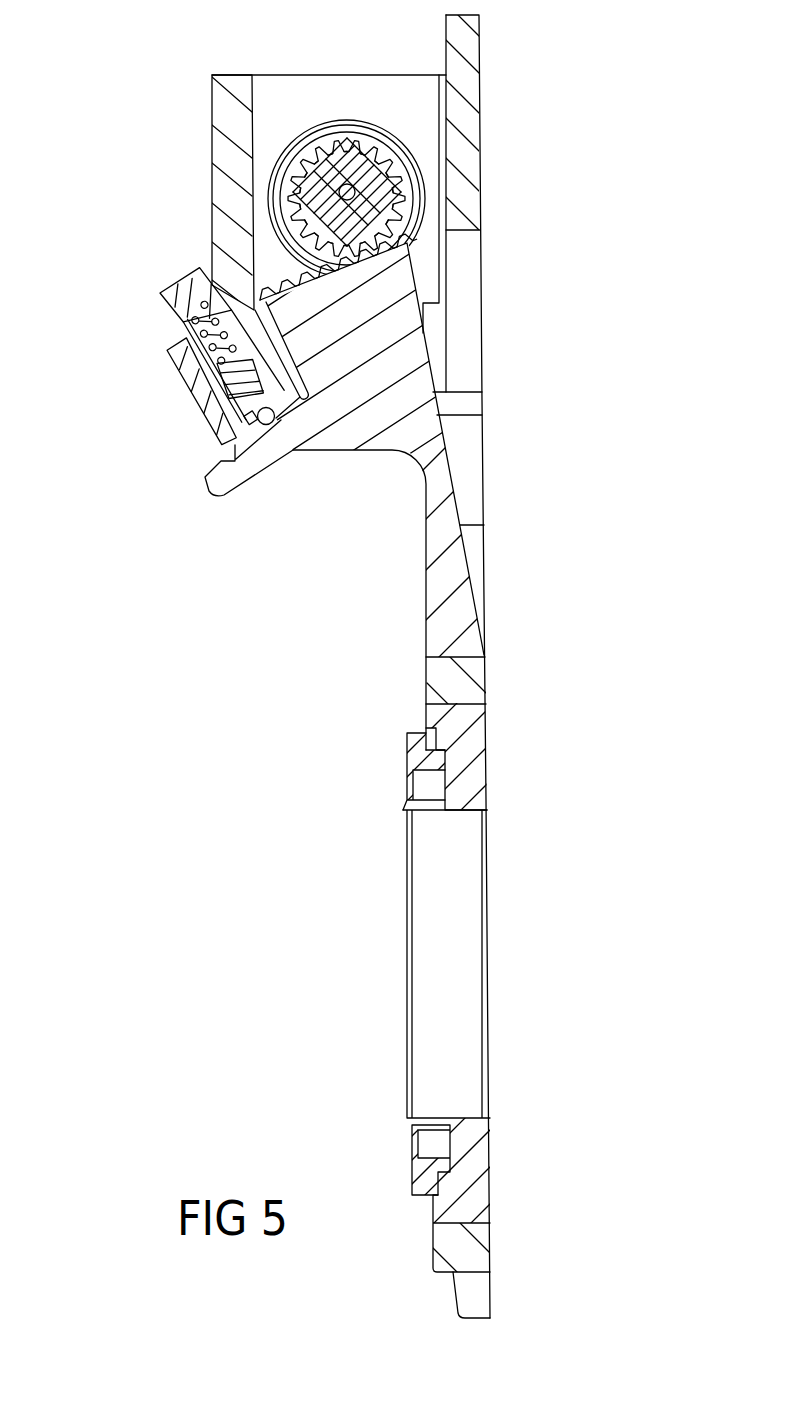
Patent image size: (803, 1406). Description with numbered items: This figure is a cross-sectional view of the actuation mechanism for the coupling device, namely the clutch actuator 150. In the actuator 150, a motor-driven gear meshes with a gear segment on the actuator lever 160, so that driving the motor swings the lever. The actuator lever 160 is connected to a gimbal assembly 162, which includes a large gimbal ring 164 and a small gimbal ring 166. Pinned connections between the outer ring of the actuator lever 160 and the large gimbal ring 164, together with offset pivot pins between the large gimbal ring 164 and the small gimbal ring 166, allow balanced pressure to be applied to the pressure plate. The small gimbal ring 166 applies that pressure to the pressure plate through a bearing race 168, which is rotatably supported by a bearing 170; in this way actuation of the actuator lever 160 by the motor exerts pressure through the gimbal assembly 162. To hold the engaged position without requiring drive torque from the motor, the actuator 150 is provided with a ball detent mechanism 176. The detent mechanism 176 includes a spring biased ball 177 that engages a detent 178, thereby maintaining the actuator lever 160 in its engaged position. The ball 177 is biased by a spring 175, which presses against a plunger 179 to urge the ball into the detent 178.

The clutch actuator 150 is at (253, 586).
The actuator lever 160 is at (453, 612).
The gimbal assembly 162 is at (485, 989).
The large gimbal ring 164 is at (463, 680).
The small gimbal ring 166 is at (472, 758).
The bearing race 168 is at (425, 1178).
The bearing 170 is at (437, 1140).
The spring 175 is at (210, 308).
The ball detent mechanism 176 is at (180, 329).
The spring biased ball 177 is at (274, 423).
The detent 178 is at (222, 467).
The plunger 179 is at (197, 328).